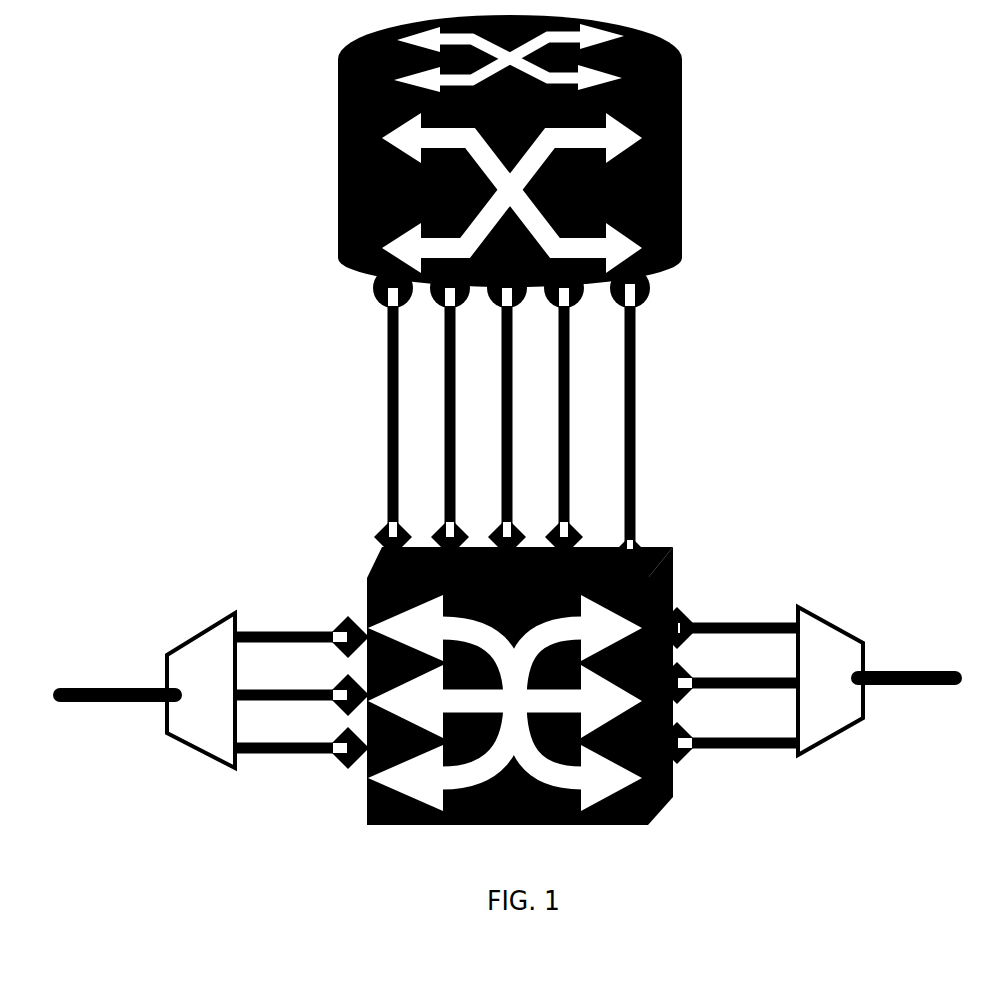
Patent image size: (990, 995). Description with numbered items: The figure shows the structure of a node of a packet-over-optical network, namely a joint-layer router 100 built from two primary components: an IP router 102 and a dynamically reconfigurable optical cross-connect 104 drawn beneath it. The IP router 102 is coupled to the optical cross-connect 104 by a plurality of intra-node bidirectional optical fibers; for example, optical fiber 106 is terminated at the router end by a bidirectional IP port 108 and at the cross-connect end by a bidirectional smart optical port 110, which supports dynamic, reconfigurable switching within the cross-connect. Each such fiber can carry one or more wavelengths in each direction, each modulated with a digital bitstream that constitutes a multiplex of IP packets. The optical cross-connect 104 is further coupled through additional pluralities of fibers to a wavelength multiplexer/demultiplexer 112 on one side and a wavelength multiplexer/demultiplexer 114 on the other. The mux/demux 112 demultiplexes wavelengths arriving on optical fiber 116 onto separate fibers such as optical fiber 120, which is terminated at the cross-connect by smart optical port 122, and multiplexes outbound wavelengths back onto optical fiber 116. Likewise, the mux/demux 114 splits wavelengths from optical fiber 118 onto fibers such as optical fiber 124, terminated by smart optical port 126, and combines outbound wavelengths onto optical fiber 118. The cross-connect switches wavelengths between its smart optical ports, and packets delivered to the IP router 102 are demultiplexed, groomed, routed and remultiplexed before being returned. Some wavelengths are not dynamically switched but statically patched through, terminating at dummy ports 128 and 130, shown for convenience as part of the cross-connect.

The joint-layer router 100 is at (977, 77).
The IP router 102 is at (338, 138).
The dynamically reconfigurable optical cross-connect (OXC) 104 is at (367, 826).
The optical fiber 106 is at (388, 417).
The IP port 108 is at (375, 291).
The smart optical port 110 is at (378, 547).
The wavelength multiplexer/demultiplexer 112 is at (195, 635).
The wavelength multiplexer/demultiplexer 114 is at (838, 627).
The optical fiber 116 is at (92, 688).
The optical fiber 118 is at (913, 688).
The optical fiber 120 is at (278, 753).
The smart optical port 122 is at (345, 767).
The optical fiber 124 is at (765, 750).
The smart optical port 126 is at (677, 760).
The dummy port 128 is at (645, 555).
The dummy port 130 is at (678, 617).